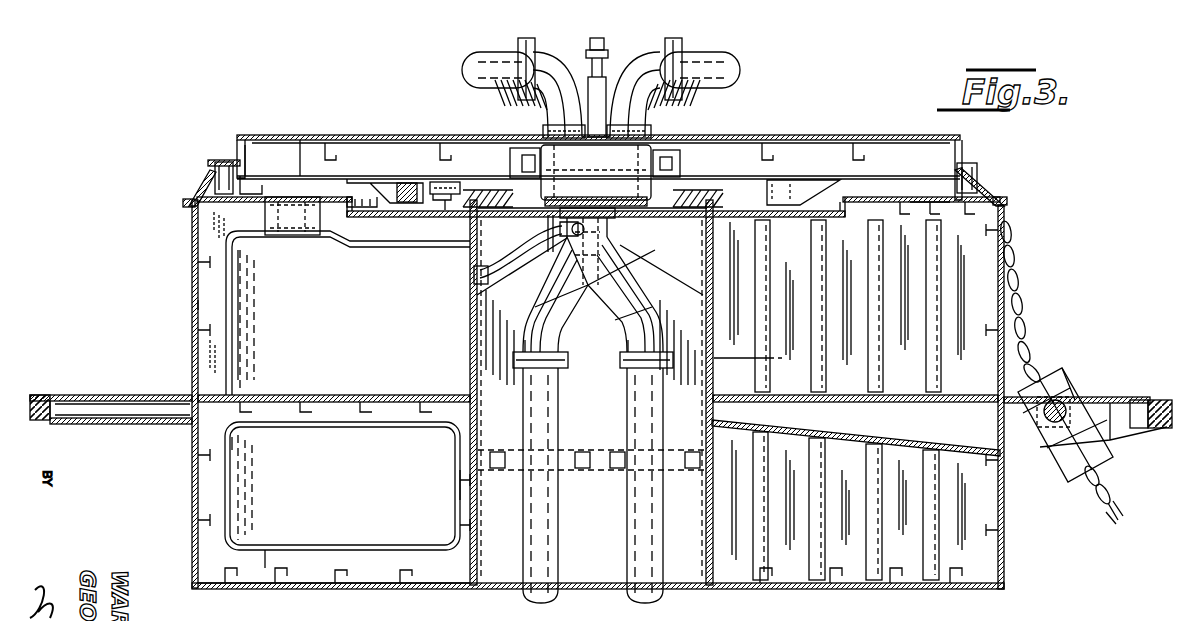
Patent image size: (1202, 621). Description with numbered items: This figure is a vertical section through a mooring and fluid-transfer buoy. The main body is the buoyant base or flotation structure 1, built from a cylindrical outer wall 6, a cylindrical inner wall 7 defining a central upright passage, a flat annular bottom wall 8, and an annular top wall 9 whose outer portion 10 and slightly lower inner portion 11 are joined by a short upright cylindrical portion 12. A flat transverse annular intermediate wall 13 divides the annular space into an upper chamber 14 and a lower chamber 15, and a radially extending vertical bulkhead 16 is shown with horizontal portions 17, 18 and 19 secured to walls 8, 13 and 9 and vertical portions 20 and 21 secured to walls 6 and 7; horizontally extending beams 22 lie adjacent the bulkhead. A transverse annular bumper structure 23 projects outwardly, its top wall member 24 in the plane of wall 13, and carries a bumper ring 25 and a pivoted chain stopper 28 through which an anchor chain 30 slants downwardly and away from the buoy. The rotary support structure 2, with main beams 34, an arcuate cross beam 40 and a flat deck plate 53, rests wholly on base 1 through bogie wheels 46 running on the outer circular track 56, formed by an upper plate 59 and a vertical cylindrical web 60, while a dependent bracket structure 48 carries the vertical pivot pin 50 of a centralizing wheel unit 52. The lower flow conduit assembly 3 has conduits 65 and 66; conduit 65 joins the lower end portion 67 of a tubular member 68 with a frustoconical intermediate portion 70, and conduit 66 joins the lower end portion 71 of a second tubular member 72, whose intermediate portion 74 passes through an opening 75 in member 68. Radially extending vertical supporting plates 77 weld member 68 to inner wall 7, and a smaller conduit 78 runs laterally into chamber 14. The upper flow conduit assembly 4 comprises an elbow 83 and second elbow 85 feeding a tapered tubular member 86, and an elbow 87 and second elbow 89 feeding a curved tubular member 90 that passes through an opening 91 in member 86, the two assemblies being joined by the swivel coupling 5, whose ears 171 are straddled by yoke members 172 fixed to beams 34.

The buoyant base or flotation structure 1 is at (190, 243).
The rotary support structure 2 is at (298, 134).
The lower flow conduit assembly 3 is at (515, 592).
The upper flow conduit assembly 4 is at (748, 56).
The swivel coupling 5 is at (603, 137).
The cylindrical outer wall 6 is at (192, 312).
The cylindrical inner wall 7 is at (468, 292).
The flat annular bottom wall 8 is at (292, 589).
The annular top wall 9 is at (862, 195).
The outer portion 10 is at (912, 197).
The inner portion 11 is at (786, 214).
The short upright cylindrical portion 12 is at (810, 192).
The flat transverse annular intermediate wall 13 is at (352, 395).
The upper chamber 14 is at (348, 313).
The lower chamber 15 is at (342, 486).
The radially extending vertical bulkhead 16 is at (218, 358).
The horizontal portion 17 is at (265, 560).
The horizontal portion 18 is at (272, 418).
The horizontal portion 19 is at (212, 228).
The vertical portion 20 is at (222, 284).
The vertical portion 21 is at (468, 497).
The horizontally extending beam 22 is at (939, 407).
The transverse annular bumper structure 23 is at (126, 393).
The top wall member 24 is at (160, 393).
The bumper ring 25 is at (36, 394).
The pivoted chain stopper 28 is at (1063, 378).
The anchor chain 30 is at (1110, 486).
The main beam 34 is at (372, 140).
The cross beam 40 is at (248, 135).
The bogie wheel 46 is at (258, 188).
The dependent bracket structure 48 is at (404, 186).
The vertical pivot pin 50 is at (445, 215).
The centralizing wheel unit 52 is at (443, 182).
The flat deck plate 53 is at (325, 140).
The outer circular track 56 is at (968, 165).
The upper flat circularly extending plate 59 is at (222, 162).
The vertical cylindrical web 60 is at (205, 162).
The conduit 65 is at (665, 593).
The conduit 66 is at (555, 502).
The lower end portion 67 is at (630, 338).
The tubular member 68 is at (655, 272).
The intermediate portion 70 is at (625, 294).
The lower end portion 71 is at (527, 342).
The second tubular member 72 is at (574, 320).
The intermediate portion 74 is at (555, 294).
The opening 75 is at (548, 284).
The radially extending vertical supporting plate 77 is at (612, 212).
The smaller conduit 78 is at (514, 256).
The elbow 83 is at (645, 122).
The second elbow 85 is at (722, 58).
The tapered tubular member 86 is at (626, 62).
The elbow 87 is at (560, 126).
The second elbow 89 is at (478, 58).
The tubular member 90 is at (558, 62).
The opening 91 is at (606, 92).
The ear 171 is at (562, 162).
The yoke member 172 is at (509, 166).